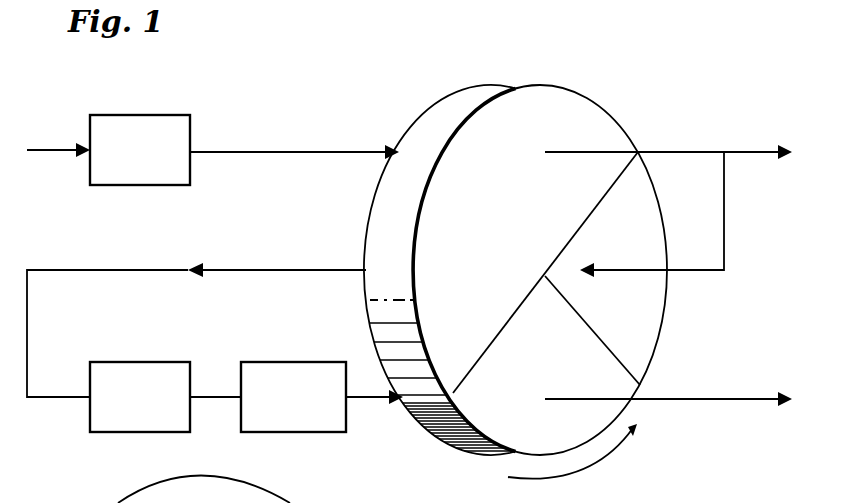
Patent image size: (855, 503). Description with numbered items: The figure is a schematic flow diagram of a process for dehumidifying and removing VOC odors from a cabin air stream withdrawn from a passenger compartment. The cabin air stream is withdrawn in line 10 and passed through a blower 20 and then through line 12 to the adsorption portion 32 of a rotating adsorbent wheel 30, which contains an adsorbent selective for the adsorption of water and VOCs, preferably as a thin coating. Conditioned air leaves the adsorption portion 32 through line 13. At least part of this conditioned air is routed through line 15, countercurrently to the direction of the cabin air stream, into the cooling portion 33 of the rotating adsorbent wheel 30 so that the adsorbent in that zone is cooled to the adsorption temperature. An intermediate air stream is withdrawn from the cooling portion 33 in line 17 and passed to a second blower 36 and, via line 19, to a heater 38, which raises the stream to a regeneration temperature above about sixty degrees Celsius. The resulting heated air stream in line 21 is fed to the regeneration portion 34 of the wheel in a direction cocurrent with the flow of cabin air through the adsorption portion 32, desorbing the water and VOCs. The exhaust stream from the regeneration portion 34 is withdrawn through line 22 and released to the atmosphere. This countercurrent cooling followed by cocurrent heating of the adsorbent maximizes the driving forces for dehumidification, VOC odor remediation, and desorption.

The cabin air stream line 10 is at (62, 148).
The line 12 is at (313, 150).
The conditioned air line 13 is at (700, 150).
The line 15 is at (726, 204).
The intermediate air stream line 17 is at (247, 270).
The line 19 is at (222, 396).
The blower 20 is at (152, 114).
The heated air stream line 21 is at (372, 399).
The exhaust line 22 is at (687, 400).
The rotating adsorbent wheel 30 is at (507, 87).
The adsorption portion 32 is at (580, 113).
The cooling portion 33 is at (640, 210).
The regeneration portion 34 is at (522, 428).
The blower 36 is at (135, 361).
The heater 38 is at (280, 361).